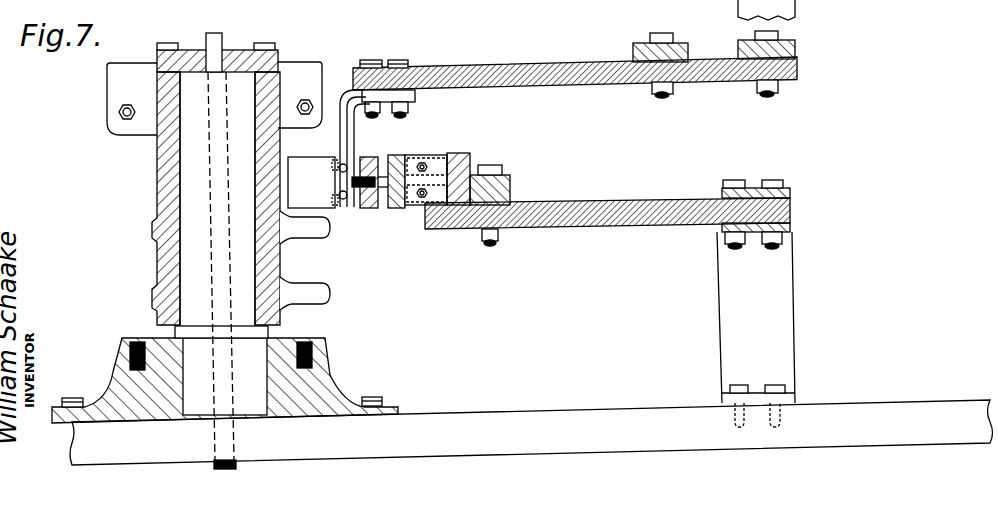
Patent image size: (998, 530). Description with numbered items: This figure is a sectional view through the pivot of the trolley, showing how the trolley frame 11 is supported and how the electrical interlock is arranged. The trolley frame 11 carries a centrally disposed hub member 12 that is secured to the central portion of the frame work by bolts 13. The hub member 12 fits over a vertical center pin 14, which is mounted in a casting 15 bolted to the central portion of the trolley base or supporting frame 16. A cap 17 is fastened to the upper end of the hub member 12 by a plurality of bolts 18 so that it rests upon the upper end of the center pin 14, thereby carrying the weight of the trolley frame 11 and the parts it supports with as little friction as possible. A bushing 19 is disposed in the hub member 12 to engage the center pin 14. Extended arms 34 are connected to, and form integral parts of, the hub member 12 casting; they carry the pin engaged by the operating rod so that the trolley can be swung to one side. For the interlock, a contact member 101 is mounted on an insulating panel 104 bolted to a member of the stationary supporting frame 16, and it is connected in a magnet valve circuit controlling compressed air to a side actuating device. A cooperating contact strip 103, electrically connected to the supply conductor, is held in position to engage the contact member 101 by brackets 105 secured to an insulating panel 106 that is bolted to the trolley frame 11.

The trolley frame 11 is at (798, 50).
The hub member 12 is at (243, 188).
The bolts 13 is at (115, 125).
The center pin 14 is at (197, 165).
The casting 15 is at (326, 381).
The trolley base 16 is at (910, 408).
The cap 17 is at (235, 43).
The bolts 18 is at (166, 43).
The bushing 19 is at (173, 188).
The extended arms 34 is at (318, 227).
The contact member 101 is at (447, 187).
The contact strip 103 is at (300, 165).
The insulating panel 104 is at (583, 225).
The brackets 105 is at (357, 137).
The insulating panel 106 is at (547, 86).